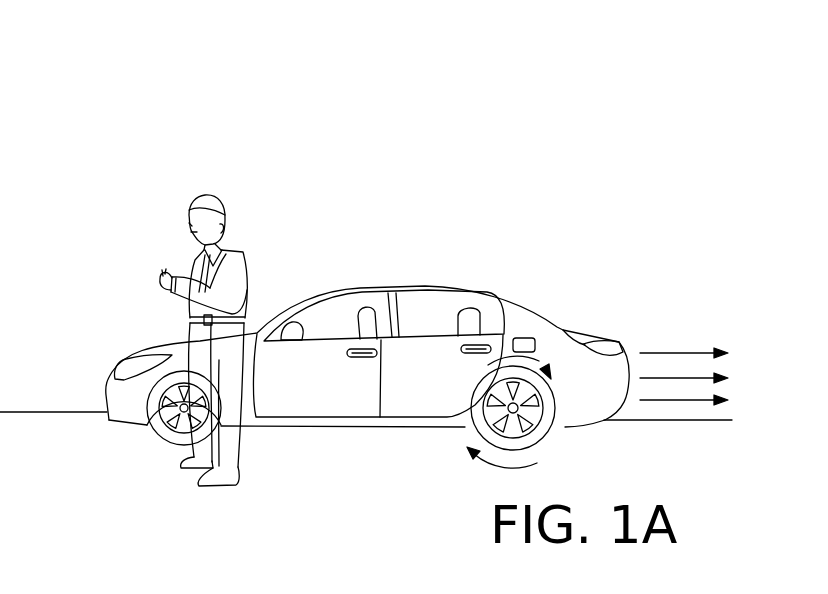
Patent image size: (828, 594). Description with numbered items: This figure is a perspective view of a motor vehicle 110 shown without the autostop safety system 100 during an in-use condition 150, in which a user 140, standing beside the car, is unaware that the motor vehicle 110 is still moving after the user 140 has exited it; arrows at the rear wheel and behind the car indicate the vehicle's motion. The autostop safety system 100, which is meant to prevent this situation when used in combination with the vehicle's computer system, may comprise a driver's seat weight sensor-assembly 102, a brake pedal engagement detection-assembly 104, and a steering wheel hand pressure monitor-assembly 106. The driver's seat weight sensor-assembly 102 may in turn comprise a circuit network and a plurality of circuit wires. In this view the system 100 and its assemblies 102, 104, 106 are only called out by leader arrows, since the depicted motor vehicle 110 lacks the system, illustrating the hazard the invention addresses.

The autostop safety system 100 is at (480, 98).
The driver's seat weight sensor-assembly 102 is at (515, 127).
The brake pedal engagement detection-assembly 104 is at (555, 164).
The steering wheel hand pressure monitor-assembly 106 is at (588, 202).
The motor vehicle 110 is at (337, 397).
The user 140 is at (233, 256).
The in-use condition 150 is at (623, 247).